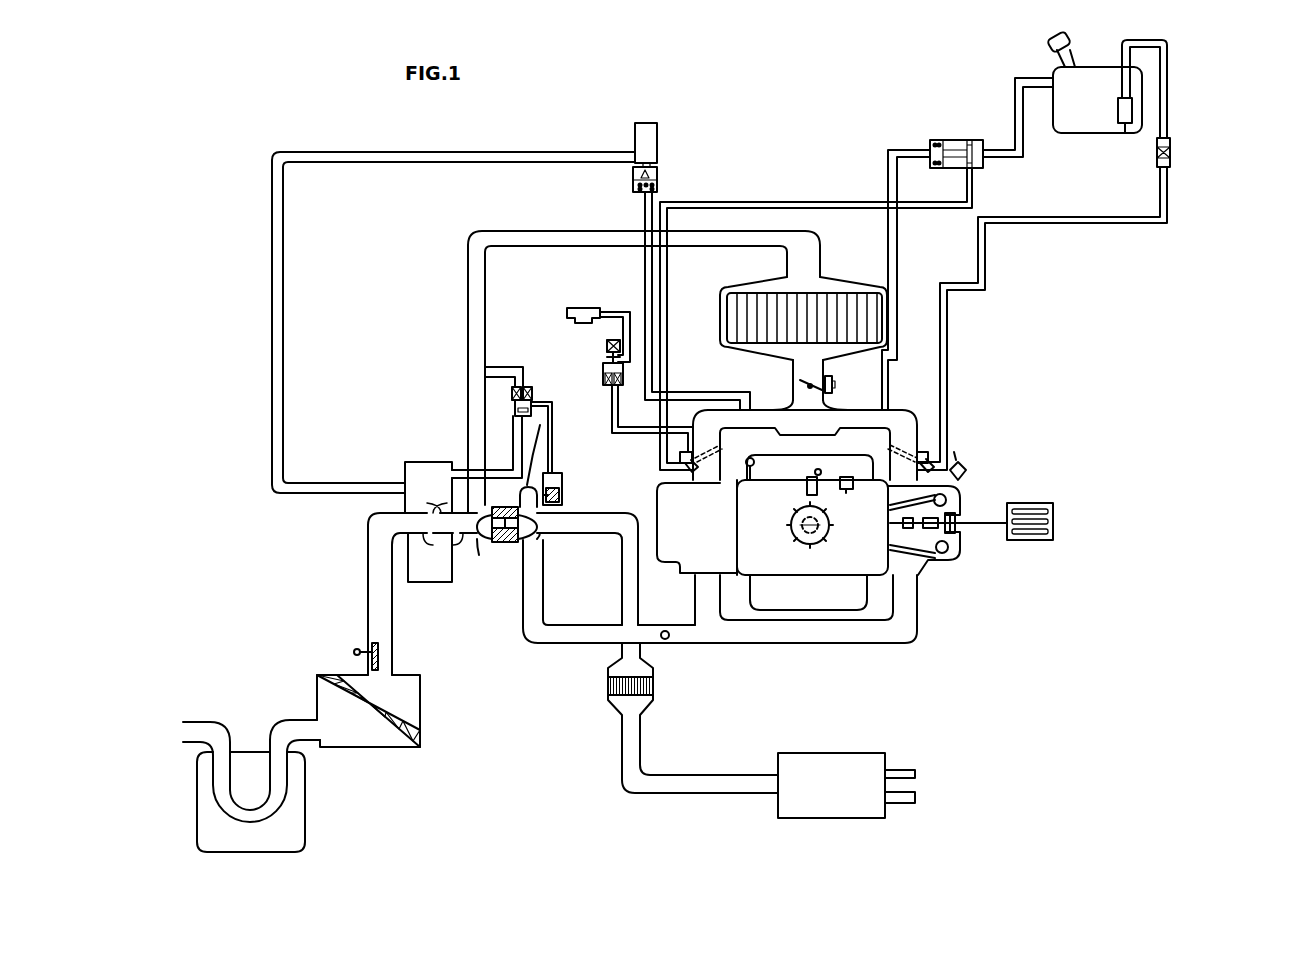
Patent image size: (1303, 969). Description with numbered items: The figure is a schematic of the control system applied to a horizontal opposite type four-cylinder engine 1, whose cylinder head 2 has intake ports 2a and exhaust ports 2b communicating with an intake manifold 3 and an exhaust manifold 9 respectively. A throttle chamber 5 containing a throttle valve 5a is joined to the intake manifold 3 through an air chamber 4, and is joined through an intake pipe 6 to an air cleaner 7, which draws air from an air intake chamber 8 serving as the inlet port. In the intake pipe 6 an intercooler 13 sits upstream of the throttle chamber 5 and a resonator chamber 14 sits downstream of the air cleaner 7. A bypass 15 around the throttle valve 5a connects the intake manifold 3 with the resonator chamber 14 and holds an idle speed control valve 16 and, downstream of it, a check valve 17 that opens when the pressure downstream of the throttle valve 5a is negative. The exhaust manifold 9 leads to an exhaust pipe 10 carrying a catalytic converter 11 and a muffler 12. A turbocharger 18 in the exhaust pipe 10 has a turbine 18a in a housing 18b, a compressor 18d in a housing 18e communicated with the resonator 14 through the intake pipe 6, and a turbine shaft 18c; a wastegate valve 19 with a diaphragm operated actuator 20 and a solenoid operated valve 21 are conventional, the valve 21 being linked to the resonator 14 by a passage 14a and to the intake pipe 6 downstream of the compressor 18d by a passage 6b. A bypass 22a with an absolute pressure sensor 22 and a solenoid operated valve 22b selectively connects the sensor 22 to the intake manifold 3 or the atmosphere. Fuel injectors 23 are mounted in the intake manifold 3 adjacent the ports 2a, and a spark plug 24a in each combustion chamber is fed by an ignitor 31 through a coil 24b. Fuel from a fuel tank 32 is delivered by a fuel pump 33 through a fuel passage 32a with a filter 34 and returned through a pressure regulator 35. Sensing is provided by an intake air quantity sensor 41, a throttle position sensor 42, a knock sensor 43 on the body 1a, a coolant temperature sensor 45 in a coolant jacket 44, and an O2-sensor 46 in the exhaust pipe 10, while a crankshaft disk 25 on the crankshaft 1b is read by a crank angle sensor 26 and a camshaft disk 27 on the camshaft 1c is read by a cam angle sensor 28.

The engine 1 is at (938, 588).
The body 1a is at (817, 567).
The crankshaft 1b is at (808, 530).
The camshaft 1c is at (963, 513).
The cylinder head 2 is at (655, 502).
The intake ports 2a is at (890, 533).
The exhaust ports 2b is at (897, 560).
The intake manifold 3 is at (882, 420).
The air chamber 4 is at (783, 410).
The throttle chamber 5 is at (808, 417).
The throttle valve 5a is at (800, 383).
The intake pipe 6 is at (572, 231).
The passage 6b is at (506, 367).
The air cleaner 7 is at (417, 700).
The air intake chamber 8 is at (300, 822).
The exhaust manifold 9 is at (803, 635).
The exhaust pipe 10 is at (550, 648).
The catalytic converter 11 is at (652, 687).
The muffler 12 is at (847, 752).
The intercooler 13 is at (720, 313).
The resonator chamber 14 is at (422, 585).
The passage 14a is at (460, 465).
The bypass 15 is at (283, 375).
The idle speed control valve 16 is at (657, 148).
The check valve 17 is at (657, 183).
The turbocharger 18 is at (488, 600).
The turbine 18a is at (562, 495).
The housing 18b is at (552, 423).
The turbine shaft 18c is at (527, 543).
The compressor 18d is at (487, 540).
The housing 18e is at (482, 558).
The wastegate valve 19 is at (537, 540).
The diaphragm operated actuator 20 is at (567, 482).
The solenoid operated valve 21 is at (531, 393).
The absolute pressure sensor 22 is at (584, 315).
The bypass 22a is at (628, 408).
The solenoid operated valve 22b is at (605, 362).
The fuel injectors 23 is at (683, 452).
The spark plug 24a is at (933, 567).
The coil 24b is at (958, 513).
The crankshaft disk 25 is at (793, 532).
The crank angle sensor 26 is at (816, 490).
The camshaft disk 27 is at (960, 490).
The cam angle sensor 28 is at (958, 457).
The ignitor 31 is at (1040, 540).
The fuel tank 32 is at (1078, 135).
The fuel passage 32a is at (1167, 85).
The fuel pump 33 is at (1128, 123).
The filter 34 is at (1170, 150).
The pressure regulator 35 is at (953, 140).
The intake air quantity sensor 41 is at (379, 652).
The throttle position sensor 42 is at (836, 386).
The knock sensor 43 is at (851, 490).
The coolant jacket 44 is at (777, 462).
The coolant temperature sensor 45 is at (747, 465).
The O2-sensor 46 is at (669, 639).